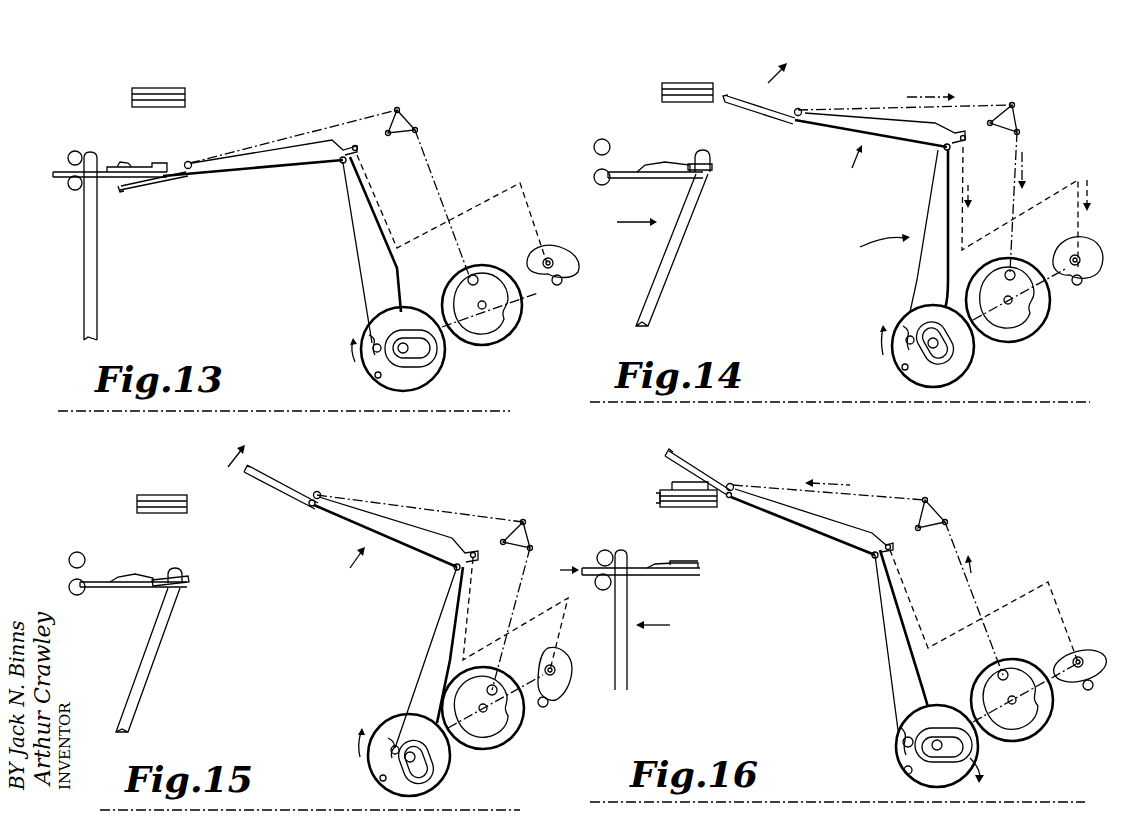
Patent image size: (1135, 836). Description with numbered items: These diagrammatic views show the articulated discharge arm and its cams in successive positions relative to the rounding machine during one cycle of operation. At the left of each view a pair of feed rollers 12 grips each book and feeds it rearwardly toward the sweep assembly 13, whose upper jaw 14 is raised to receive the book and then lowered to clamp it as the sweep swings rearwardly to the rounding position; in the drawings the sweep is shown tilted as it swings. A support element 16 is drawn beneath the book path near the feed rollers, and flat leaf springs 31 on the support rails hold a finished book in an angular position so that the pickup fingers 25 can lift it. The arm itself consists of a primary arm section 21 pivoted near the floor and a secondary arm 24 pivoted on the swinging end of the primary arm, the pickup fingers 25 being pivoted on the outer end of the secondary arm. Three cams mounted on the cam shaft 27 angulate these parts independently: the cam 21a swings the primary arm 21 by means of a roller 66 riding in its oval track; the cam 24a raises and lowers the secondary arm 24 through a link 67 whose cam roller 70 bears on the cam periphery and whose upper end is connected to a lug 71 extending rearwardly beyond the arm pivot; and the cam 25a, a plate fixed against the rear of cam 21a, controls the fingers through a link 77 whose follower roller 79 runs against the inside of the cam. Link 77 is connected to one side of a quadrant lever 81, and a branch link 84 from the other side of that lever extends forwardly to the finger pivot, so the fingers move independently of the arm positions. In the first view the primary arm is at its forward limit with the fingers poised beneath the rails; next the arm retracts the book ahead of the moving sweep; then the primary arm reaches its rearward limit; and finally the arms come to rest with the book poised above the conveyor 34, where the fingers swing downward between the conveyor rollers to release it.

In FIG. 13, the feed rollers 12 is at (68, 184).
In FIG. 14, the feed rollers 12 is at (594, 179).
In FIG. 15, the feed rollers 12 is at (70, 585).
In FIG. 16, the feed rollers 12 is at (598, 556).
In FIG. 13, the sweep assembly 13 is at (99, 250).
In FIG. 14, the sweep assembly 13 is at (722, 236).
In FIG. 15, the sweep assembly 13 is at (162, 642).
In FIG. 16, the sweep assembly 13 is at (627, 607).
In FIG. 14, the upper jaw 14 is at (711, 160).
In FIG. 13, the table 16 is at (108, 178).
In FIG. 14, the table 16 is at (628, 178).
In FIG. 15, the table 16 is at (118, 589).
In FIG. 16, the table 16 is at (672, 578).
In FIG. 13, the primary arm section 21 is at (378, 273).
In FIG. 14, the primary arm section 21 is at (927, 268).
In FIG. 15, the primary arm section 21 is at (430, 660).
In FIG. 16, the primary arm section 21 is at (893, 644).
In FIG. 13, the cam for the primary arm 21a is at (428, 373).
In FIG. 14, the cam for the primary arm 21a is at (955, 378).
In FIG. 15, the cam for the primary arm 21a is at (440, 782).
In FIG. 16, the cam for the primary arm 21a is at (925, 775).
In FIG. 13, the secondary arm 24 is at (267, 160).
In FIG. 14, the secondary arm 24 is at (882, 135).
In FIG. 15, the secondary arm 24 is at (397, 531).
In FIG. 16, the secondary arm 24 is at (819, 523).
In FIG. 13, the cam for the secondary arm 24a is at (563, 256).
In FIG. 14, the cam for the secondary arm 24a is at (1083, 252).
In FIG. 15, the cam for the secondary arm 24a is at (560, 682).
In FIG. 16, the cam for the secondary arm 24a is at (1082, 656).
In FIG. 13, the pickup fingers 25 is at (155, 183).
In FIG. 14, the pickup fingers 25 is at (770, 118).
In FIG. 15, the pickup fingers 25 is at (280, 495).
In FIG. 16, the pickup fingers 25 is at (724, 500).
In FIG. 13, the cam for the pickup fingers 25a is at (510, 326).
In FIG. 14, the cam for the pickup fingers 25a is at (1022, 330).
In FIG. 15, the cam for the pickup fingers 25a is at (493, 742).
In FIG. 16, the cam for the pickup fingers 25a is at (1012, 742).
In FIG. 13, the cam shaft 27 is at (520, 282).
In FIG. 14, the cam shaft 27 is at (973, 320).
In FIG. 15, the cam shaft 27 is at (450, 730).
In FIG. 16, the cam shaft 27 is at (1053, 677).
In FIG. 13, the flat leaf springs 31 is at (114, 167).
In FIG. 14, the flat leaf springs 31 is at (657, 167).
In FIG. 15, the flat leaf springs 31 is at (129, 577).
In FIG. 16, the flat leaf springs 31 is at (657, 568).
In FIG. 13, the conveyor 34 is at (150, 90).
In FIG. 14, the conveyor 34 is at (692, 86).
In FIG. 15, the conveyor 34 is at (163, 495).
In FIG. 16, the conveyor 34 is at (668, 490).
In FIG. 13, the roller 66 is at (368, 338).
In FIG. 14, the roller 66 is at (903, 362).
In FIG. 15, the roller 66 is at (392, 748).
In FIG. 13, the link 67 is at (380, 200).
In FIG. 14, the link 67 is at (964, 222).
In FIG. 15, the link 67 is at (470, 608).
In FIG. 16, the link 67 is at (916, 597).
In FIG. 13, the cam roller 70 is at (563, 282).
In FIG. 14, the cam roller 70 is at (1080, 285).
In FIG. 15, the cam roller 70 is at (550, 705).
In FIG. 16, the cam roller 70 is at (1090, 690).
In FIG. 13, the lug 71 is at (350, 146).
In FIG. 15, the lug 71 is at (463, 551).
In FIG. 16, the lug 71 is at (880, 540).
In FIG. 13, the link 77 is at (438, 186).
In FIG. 14, the link 77 is at (1021, 149).
In FIG. 15, the link 77 is at (520, 593).
In FIG. 16, the link 77 is at (960, 544).
In FIG. 13, the follower roller 79 is at (475, 276).
In FIG. 14, the follower roller 79 is at (1013, 270).
In FIG. 15, the follower roller 79 is at (497, 695).
In FIG. 16, the follower roller 79 is at (1004, 670).
In FIG. 13, the quadrant lever 81 is at (403, 120).
In FIG. 14, the quadrant lever 81 is at (1020, 118).
In FIG. 15, the quadrant lever 81 is at (527, 537).
In FIG. 16, the quadrant lever 81 is at (937, 507).
In FIG. 13, the branch link 84 is at (320, 122).
In FIG. 14, the branch link 84 is at (903, 107).
In FIG. 15, the branch link 84 is at (428, 513).
In FIG. 16, the branch link 84 is at (874, 497).